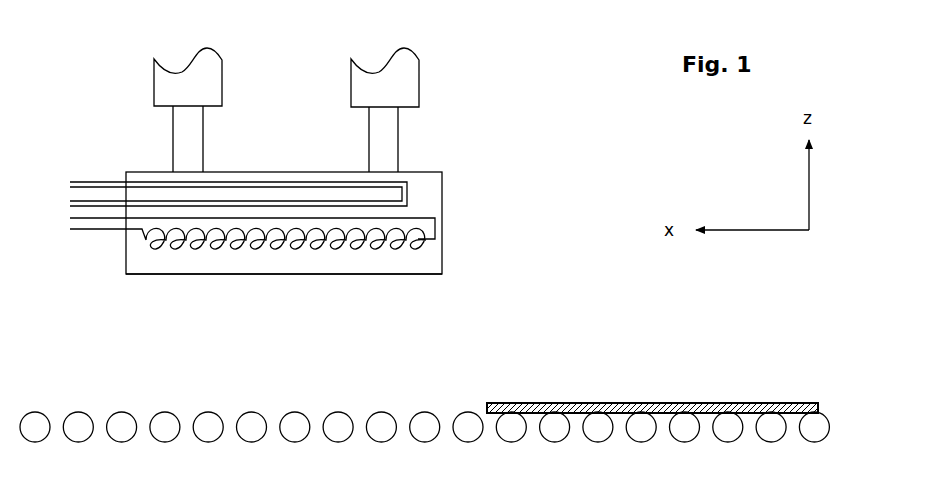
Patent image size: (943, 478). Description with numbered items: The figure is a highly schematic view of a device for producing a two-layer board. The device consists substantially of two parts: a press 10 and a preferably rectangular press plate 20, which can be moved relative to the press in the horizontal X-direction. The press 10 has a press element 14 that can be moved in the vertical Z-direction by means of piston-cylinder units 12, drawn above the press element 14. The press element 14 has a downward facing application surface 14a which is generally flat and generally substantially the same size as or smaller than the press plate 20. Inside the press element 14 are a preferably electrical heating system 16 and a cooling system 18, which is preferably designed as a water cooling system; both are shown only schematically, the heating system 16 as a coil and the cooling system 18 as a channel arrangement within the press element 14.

The press 10 is at (299, 183).
The piston-cylinder units 12 is at (190, 138).
The press element 14 is at (133, 252).
The application surface 14a is at (267, 278).
The heating system 16 is at (418, 242).
The cooling system 18 is at (403, 193).
The press plate 20 is at (818, 406).